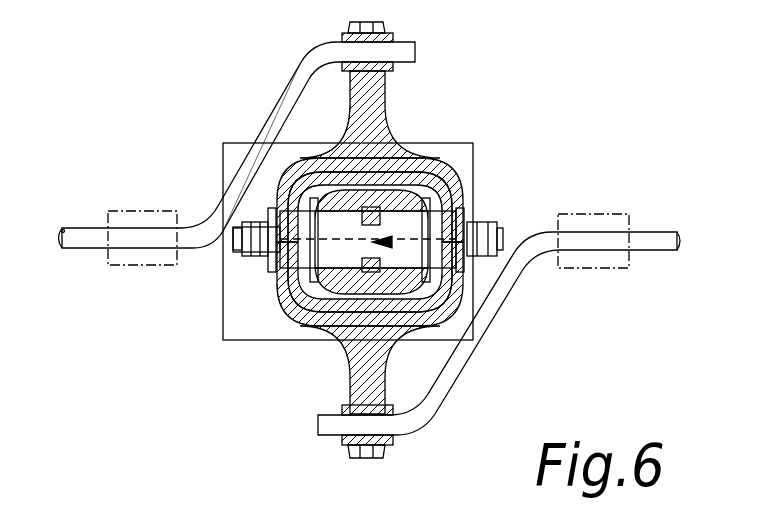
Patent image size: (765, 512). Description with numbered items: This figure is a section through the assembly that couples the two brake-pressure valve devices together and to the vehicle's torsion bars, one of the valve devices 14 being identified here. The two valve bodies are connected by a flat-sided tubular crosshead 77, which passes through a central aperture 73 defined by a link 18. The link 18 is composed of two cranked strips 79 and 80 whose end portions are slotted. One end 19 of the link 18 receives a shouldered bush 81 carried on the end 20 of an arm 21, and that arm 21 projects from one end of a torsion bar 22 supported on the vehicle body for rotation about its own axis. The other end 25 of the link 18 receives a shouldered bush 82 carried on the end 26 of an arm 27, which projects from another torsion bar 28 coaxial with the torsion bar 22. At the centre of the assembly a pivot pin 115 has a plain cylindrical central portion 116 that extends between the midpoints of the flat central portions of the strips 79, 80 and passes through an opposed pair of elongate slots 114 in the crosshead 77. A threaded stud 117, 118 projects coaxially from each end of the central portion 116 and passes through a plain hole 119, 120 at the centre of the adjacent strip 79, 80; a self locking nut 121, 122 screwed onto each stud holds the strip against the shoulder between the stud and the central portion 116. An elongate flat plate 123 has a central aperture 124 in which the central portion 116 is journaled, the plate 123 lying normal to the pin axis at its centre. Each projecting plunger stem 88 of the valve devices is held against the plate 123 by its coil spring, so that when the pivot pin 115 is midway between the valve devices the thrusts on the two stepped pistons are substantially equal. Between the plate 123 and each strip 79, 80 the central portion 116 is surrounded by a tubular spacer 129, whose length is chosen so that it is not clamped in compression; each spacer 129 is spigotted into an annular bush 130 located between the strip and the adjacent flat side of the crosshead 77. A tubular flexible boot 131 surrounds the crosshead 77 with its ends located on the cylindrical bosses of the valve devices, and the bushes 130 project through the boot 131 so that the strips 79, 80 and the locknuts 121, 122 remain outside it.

The valve device 14 is at (478, 150).
The link 18 is at (282, 321).
The end of the link 19 is at (368, 24).
The end of the arm 20 is at (415, 52).
The arm 21 is at (288, 84).
The torsion bar 22 is at (92, 243).
The other end of the link 25 is at (356, 460).
The end of the arm 26 is at (320, 425).
The arm 27 is at (480, 344).
The torsion bar 28 is at (652, 243).
The central aperture 73 is at (343, 157).
The tubular crosshead 77 is at (440, 195).
The cranked strip 79 is at (400, 165).
The cranked strip 80 is at (312, 322).
The shouldered bush 81 is at (394, 38).
The shouldered bush 82 is at (395, 446).
The plunger stem 88 is at (385, 318).
The elongate slot 114 is at (305, 214).
The pivot pin 115 is at (392, 242).
The cylindrical central portion 116 is at (400, 230).
The threaded stud 117 is at (560, 212).
The threaded stud 118 is at (235, 252).
The plain hole 119 is at (462, 270).
The plain hole 120 is at (300, 268).
The self locking nut 121 is at (470, 240).
The self locking nut 122 is at (255, 272).
The elongate flat plate 123 is at (372, 168).
The central aperture 124 is at (408, 183).
The tubular spacer 129 is at (345, 312).
The annular bush 130 is at (295, 205).
The flexible boot 131 is at (345, 180).